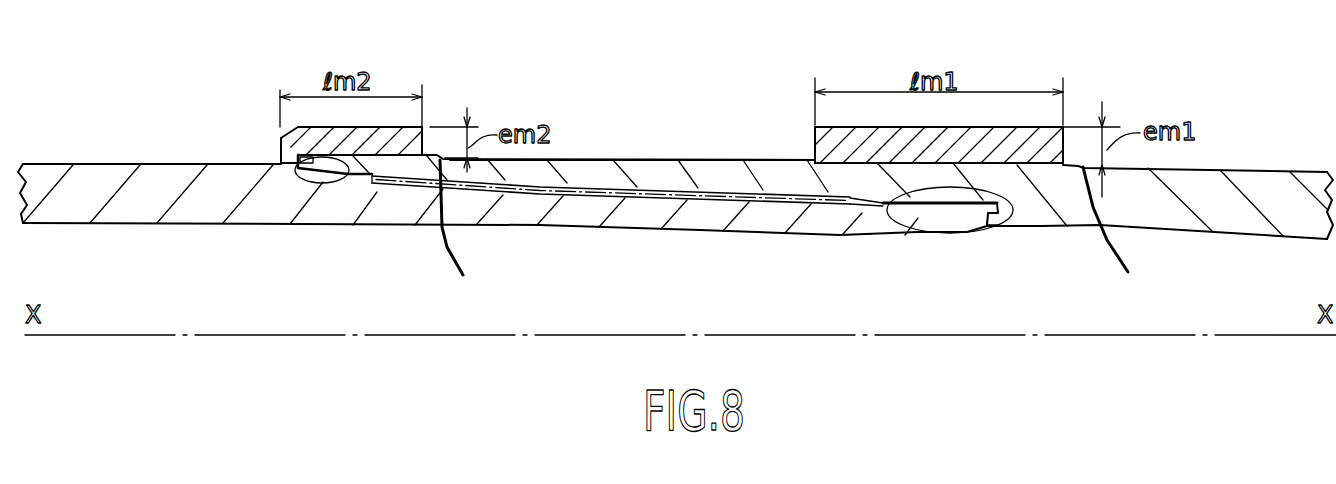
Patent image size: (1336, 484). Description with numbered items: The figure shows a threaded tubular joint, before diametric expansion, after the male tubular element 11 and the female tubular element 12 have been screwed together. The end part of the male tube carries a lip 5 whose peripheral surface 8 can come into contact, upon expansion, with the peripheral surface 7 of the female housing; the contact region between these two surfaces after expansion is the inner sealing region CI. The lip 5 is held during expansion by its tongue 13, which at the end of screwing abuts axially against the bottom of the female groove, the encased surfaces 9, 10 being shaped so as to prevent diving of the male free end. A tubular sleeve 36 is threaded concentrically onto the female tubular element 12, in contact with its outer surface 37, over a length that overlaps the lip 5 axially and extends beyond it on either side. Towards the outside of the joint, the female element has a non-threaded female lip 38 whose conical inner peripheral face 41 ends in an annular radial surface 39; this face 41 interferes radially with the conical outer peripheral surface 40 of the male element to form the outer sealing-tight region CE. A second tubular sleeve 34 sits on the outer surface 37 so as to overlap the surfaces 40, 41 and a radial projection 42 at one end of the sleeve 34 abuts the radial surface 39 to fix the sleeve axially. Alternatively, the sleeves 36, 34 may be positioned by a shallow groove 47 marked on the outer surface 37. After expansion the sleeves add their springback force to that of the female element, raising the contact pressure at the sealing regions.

The lip 5 is at (880, 223).
The peripheral surface 7 is at (967, 183).
The peripheral surface 8 is at (920, 212).
The encased surface 9 is at (973, 213).
The encased surface 10 is at (1003, 210).
The male tubular element 11 is at (623, 200).
The female tubular element 12 is at (725, 178).
The tongue 13 is at (995, 225).
The tubular sleeve 34 is at (280, 140).
The tubular sleeve 36 is at (815, 145).
The outer surface 37 is at (647, 160).
The female lip 38 is at (381, 154).
The radial surface 39 is at (290, 173).
The outer peripheral surface 40 is at (322, 172).
The inner peripheral face 41 is at (330, 190).
The radial projection 42 is at (279, 158).
The shallow groove 47 is at (807, 232).